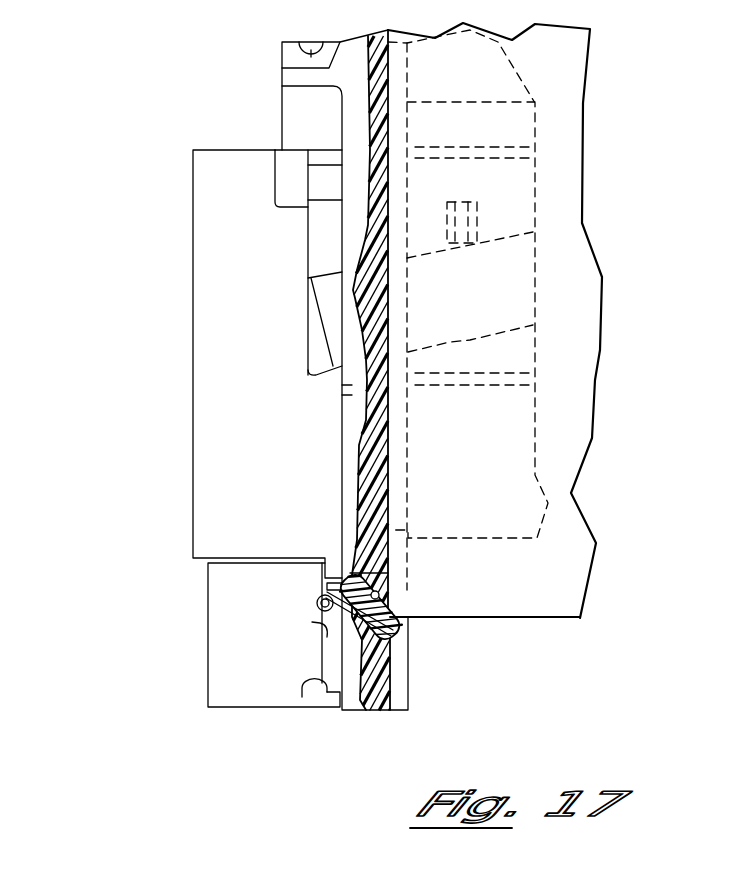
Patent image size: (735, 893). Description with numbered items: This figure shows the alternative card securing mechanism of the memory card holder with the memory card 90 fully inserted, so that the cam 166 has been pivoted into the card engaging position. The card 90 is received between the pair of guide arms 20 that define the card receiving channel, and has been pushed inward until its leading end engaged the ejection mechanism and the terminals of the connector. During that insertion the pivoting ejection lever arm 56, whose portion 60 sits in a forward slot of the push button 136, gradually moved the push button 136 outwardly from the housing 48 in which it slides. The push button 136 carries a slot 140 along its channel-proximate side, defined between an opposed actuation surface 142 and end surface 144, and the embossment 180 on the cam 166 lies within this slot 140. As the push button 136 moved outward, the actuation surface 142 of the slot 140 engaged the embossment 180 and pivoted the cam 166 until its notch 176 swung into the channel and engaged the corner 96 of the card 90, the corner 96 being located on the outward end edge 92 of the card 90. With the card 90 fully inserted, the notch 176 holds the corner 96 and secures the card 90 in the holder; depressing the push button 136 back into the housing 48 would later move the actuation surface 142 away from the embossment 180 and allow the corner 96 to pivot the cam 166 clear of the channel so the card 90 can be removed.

The guide arms 20 is at (334, 118).
The housing 48 is at (200, 395).
The ejection lever arm 56 is at (500, 289).
The portion of the ejection lever arm 60 is at (316, 338).
The memory card 90 is at (607, 590).
The outward end edge 92 is at (515, 620).
The corner 96 is at (390, 630).
The push button 136 is at (263, 728).
The slot 140 is at (312, 622).
The actuation surface 142 is at (317, 603).
The end surface 144 is at (302, 697).
The cam 166 is at (344, 640).
The notch 176 is at (399, 604).
The embossment 180 is at (323, 581).